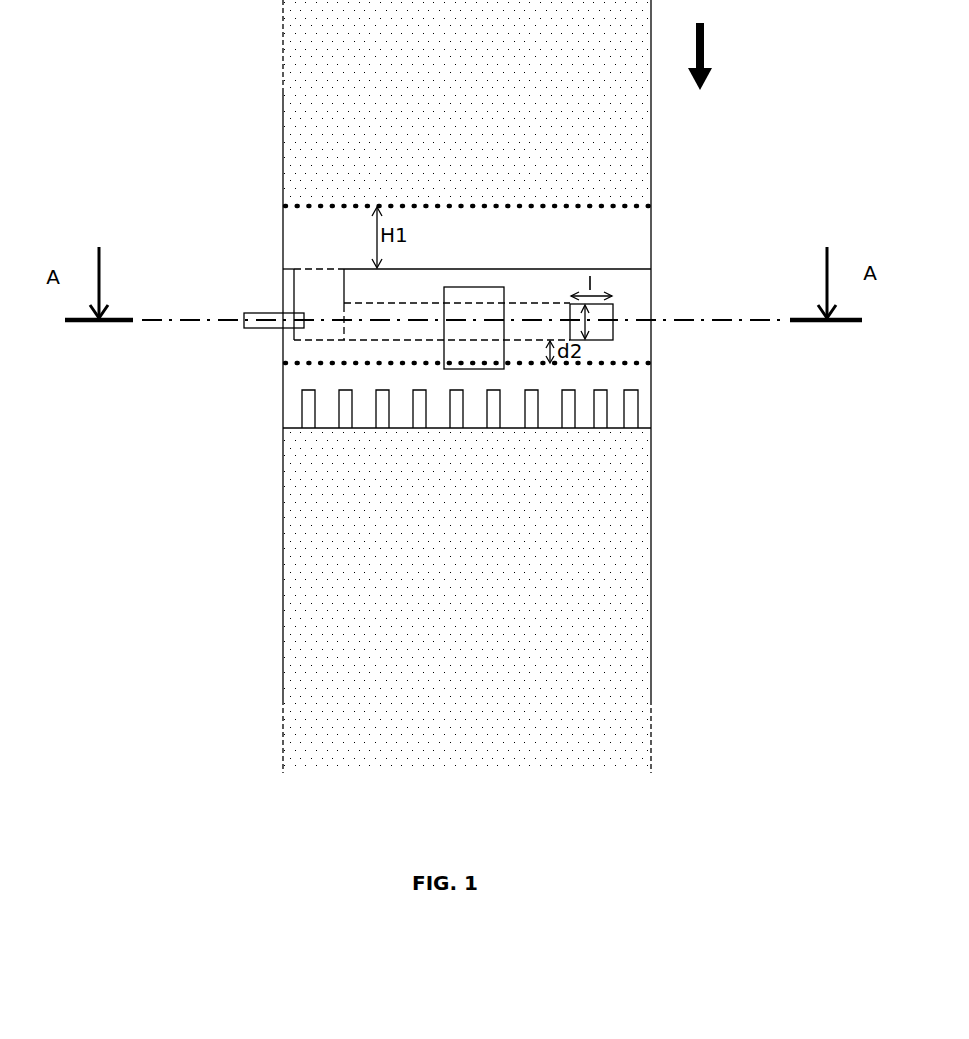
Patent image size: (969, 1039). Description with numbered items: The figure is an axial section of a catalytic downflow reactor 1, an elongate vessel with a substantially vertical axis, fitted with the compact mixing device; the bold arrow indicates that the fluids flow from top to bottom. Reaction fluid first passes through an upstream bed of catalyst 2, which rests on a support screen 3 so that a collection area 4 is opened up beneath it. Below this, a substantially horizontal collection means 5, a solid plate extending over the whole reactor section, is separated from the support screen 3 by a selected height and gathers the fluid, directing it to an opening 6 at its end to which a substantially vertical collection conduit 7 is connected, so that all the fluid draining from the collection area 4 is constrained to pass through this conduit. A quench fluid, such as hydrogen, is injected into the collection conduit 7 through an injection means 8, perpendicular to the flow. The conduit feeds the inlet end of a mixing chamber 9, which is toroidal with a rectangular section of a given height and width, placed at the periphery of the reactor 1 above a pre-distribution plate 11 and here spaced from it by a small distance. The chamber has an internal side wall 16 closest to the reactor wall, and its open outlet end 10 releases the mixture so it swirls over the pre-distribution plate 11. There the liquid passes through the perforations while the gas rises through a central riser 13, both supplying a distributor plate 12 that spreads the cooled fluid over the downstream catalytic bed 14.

The reactor 1 is at (283, 135).
The bed of catalyst 2 is at (467, 102).
The support screen 3 is at (296, 204).
The collection area 4 is at (467, 285).
The collection means 5 is at (542, 268).
The opening 6 is at (317, 268).
The collection conduit 7 is at (294, 298).
The injection means 8 is at (265, 330).
The mixing chamber 9 is at (510, 298).
The outlet end 10 is at (613, 323).
The pre-distribution plate 11 is at (651, 363).
The distributor plate 12 is at (651, 427).
The central riser 13 is at (472, 287).
The catalytic bed 14 is at (467, 601).
The internal side wall 16 is at (613, 327).